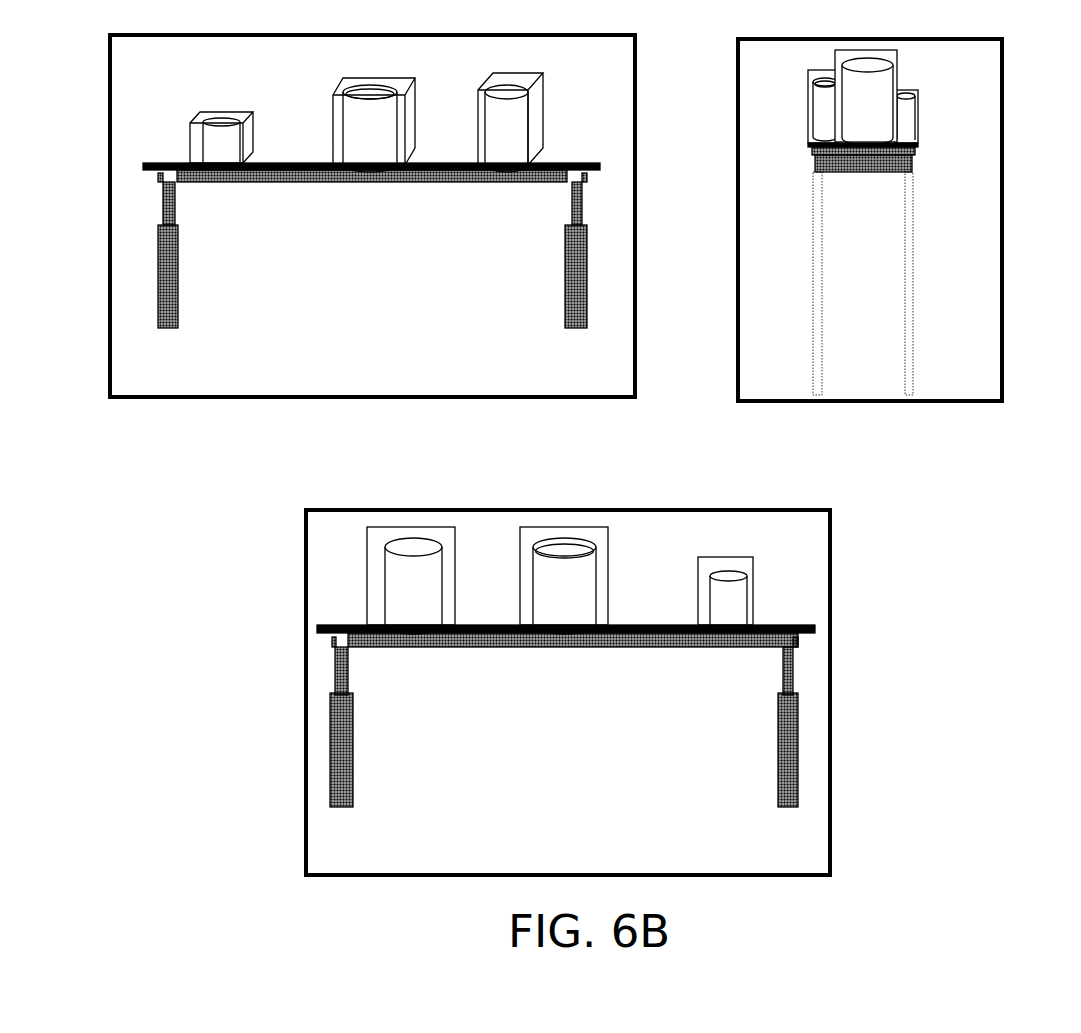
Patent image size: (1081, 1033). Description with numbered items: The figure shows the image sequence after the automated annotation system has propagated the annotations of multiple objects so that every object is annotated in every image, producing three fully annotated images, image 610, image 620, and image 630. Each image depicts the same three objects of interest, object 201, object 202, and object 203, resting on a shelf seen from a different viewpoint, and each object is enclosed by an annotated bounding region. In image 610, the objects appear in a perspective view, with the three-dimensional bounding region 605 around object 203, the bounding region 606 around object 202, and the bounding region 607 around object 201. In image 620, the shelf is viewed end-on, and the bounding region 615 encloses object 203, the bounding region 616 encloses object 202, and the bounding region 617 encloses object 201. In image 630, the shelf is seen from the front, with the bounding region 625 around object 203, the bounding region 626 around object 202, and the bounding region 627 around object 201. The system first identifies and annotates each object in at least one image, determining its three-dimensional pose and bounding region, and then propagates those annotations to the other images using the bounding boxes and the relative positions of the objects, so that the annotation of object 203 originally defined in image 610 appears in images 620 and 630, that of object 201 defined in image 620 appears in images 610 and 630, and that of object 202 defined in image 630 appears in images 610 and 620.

The object 201 is at (639, 346).
The object 202 is at (590, 356).
The object 203 is at (559, 361).
The 3D bounding region 605 is at (206, 108).
The bounding region 606 is at (378, 72).
The bounding region 607 is at (518, 70).
The image 610 is at (372, 216).
The bounding region 615 is at (928, 116).
The bounding region 616 is at (800, 110).
The bounding region 617 is at (876, 47).
The image 620 is at (870, 222).
The bounding region 625 is at (728, 552).
The bounding region 626 is at (535, 518).
The bounding region 627 is at (413, 527).
The image 630 is at (568, 692).